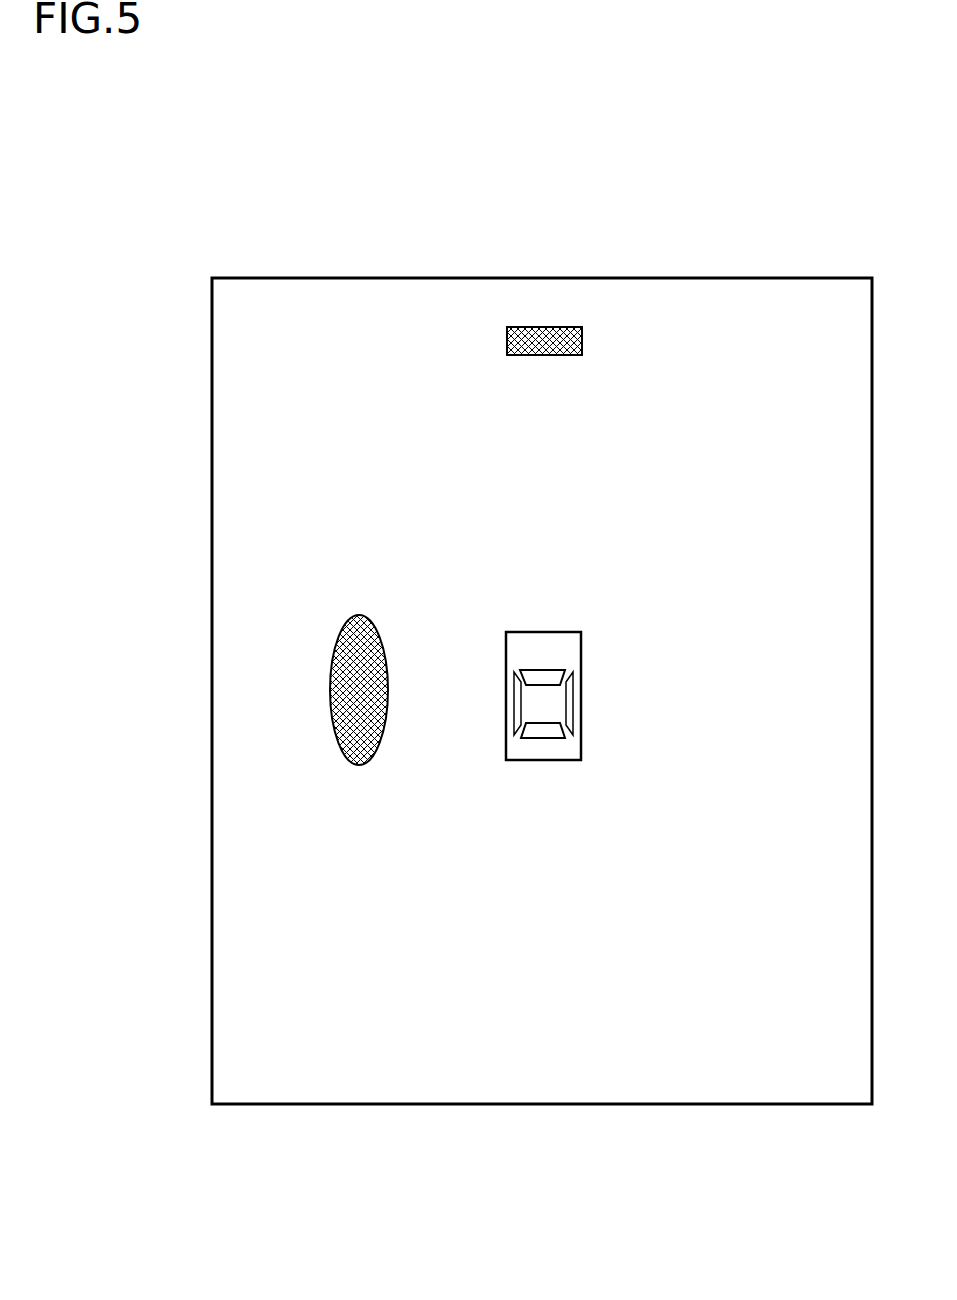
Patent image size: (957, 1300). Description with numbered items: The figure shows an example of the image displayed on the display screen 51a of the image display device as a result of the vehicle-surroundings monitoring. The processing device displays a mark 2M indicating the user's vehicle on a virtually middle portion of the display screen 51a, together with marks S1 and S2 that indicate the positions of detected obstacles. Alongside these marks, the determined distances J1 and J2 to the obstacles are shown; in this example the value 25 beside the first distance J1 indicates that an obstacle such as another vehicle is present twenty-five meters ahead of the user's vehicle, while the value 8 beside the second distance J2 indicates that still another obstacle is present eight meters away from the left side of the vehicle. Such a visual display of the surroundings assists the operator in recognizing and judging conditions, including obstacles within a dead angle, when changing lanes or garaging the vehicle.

The display screen 51a is at (541, 1105).
The mark S1 is at (582, 341).
The numeric indicator 25 is at (546, 385).
The determined distance J1 is at (572, 387).
The mark S2 is at (357, 767).
The indicator 8 is at (416, 690).
The determined distance J2 is at (415, 712).
The mark 2M is at (581, 698).